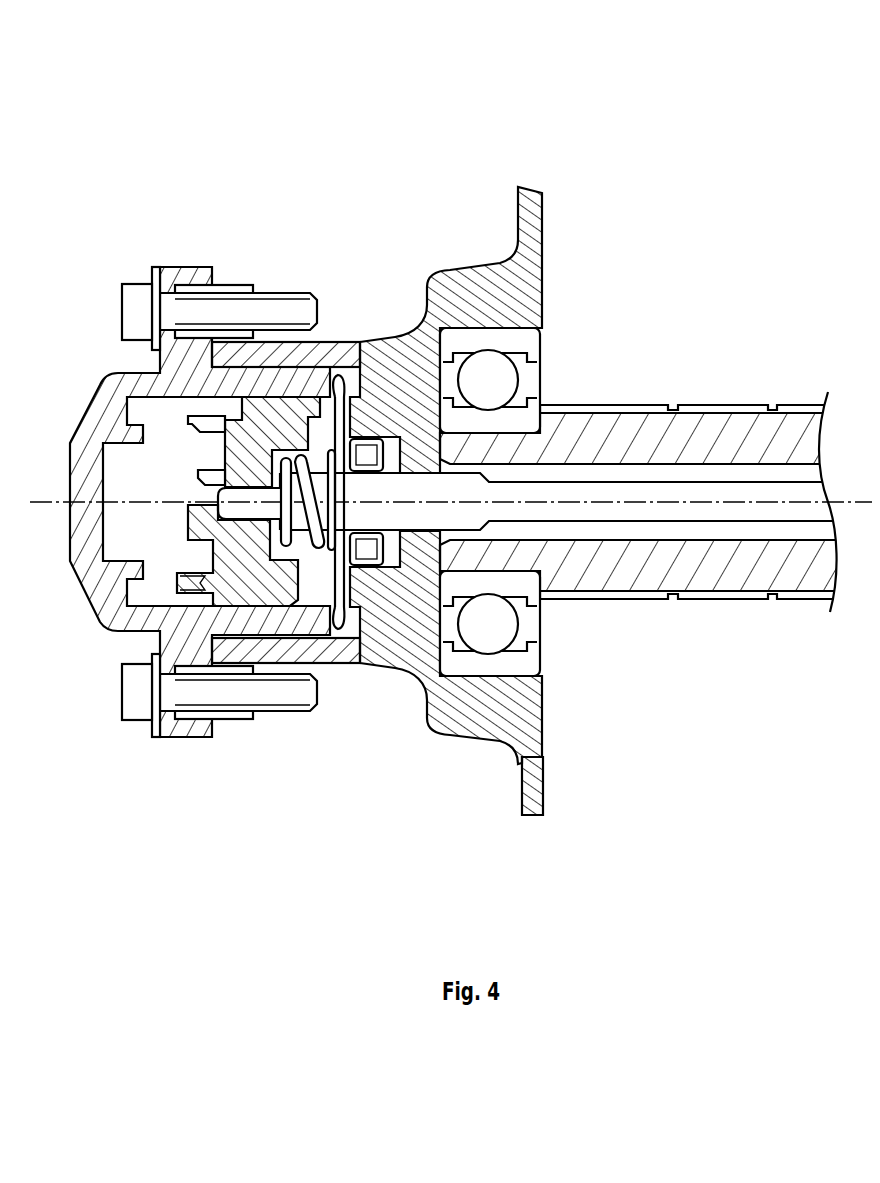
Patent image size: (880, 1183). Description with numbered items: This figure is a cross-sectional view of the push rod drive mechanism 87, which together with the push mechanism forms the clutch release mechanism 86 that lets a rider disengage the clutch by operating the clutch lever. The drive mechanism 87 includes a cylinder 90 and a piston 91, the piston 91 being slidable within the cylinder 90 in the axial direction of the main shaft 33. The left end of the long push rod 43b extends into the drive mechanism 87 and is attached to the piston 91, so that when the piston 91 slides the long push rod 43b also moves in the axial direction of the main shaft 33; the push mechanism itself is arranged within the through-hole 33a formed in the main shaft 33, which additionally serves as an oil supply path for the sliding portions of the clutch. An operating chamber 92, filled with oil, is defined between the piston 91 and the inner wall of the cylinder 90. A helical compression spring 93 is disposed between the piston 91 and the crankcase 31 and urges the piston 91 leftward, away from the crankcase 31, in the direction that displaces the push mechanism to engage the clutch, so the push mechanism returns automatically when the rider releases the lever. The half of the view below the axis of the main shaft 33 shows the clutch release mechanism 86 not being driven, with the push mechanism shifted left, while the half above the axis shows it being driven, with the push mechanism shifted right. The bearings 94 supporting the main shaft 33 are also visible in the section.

The crankcase 31 is at (533, 762).
The main shaft 33 is at (642, 496).
The through-hole 33a is at (690, 536).
The long push rod 43b is at (597, 481).
The clutch release mechanism 86 is at (469, 414).
The push rod drive mechanism 87 is at (565, 162).
The cylinder 90 is at (97, 390).
The piston 91 is at (292, 597).
The operating chamber 92 is at (137, 545).
The helical compression spring 93 is at (316, 458).
The bearing 94 is at (540, 660).